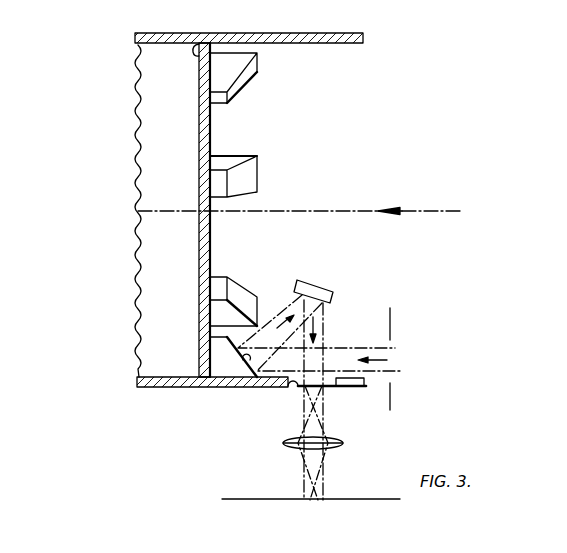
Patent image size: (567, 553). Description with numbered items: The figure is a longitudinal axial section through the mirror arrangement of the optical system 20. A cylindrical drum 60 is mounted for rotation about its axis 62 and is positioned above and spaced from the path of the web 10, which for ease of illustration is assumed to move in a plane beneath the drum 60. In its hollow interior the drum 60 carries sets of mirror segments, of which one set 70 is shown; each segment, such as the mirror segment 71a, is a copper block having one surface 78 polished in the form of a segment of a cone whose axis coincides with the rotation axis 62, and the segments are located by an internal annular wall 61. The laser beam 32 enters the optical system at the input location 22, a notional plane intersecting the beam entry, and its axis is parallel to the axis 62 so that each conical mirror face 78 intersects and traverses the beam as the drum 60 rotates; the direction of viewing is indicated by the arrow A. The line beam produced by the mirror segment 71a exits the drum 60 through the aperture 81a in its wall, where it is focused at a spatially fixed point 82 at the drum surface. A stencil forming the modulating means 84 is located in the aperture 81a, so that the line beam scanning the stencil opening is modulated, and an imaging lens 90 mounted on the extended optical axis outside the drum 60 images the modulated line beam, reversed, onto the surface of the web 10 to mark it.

The cylindrical drum 60 is at (178, 34).
The internal annular wall 61 is at (201, 38).
The drum axis 62 is at (183, 211).
The set of mirror segments 70 is at (251, 140).
The optical system 20 is at (325, 130).
The viewing direction A is at (299, 203).
The mirror segment 71a is at (227, 364).
The conical mirror face 78 is at (238, 386).
The aperture 81a is at (303, 388).
The line beam focus point 82 is at (327, 387).
The laser beam 32 is at (395, 347).
The input location 22 is at (392, 389).
The modulating means 84 is at (301, 394).
The imaging lens 90 is at (342, 444).
The web 10 is at (244, 499).